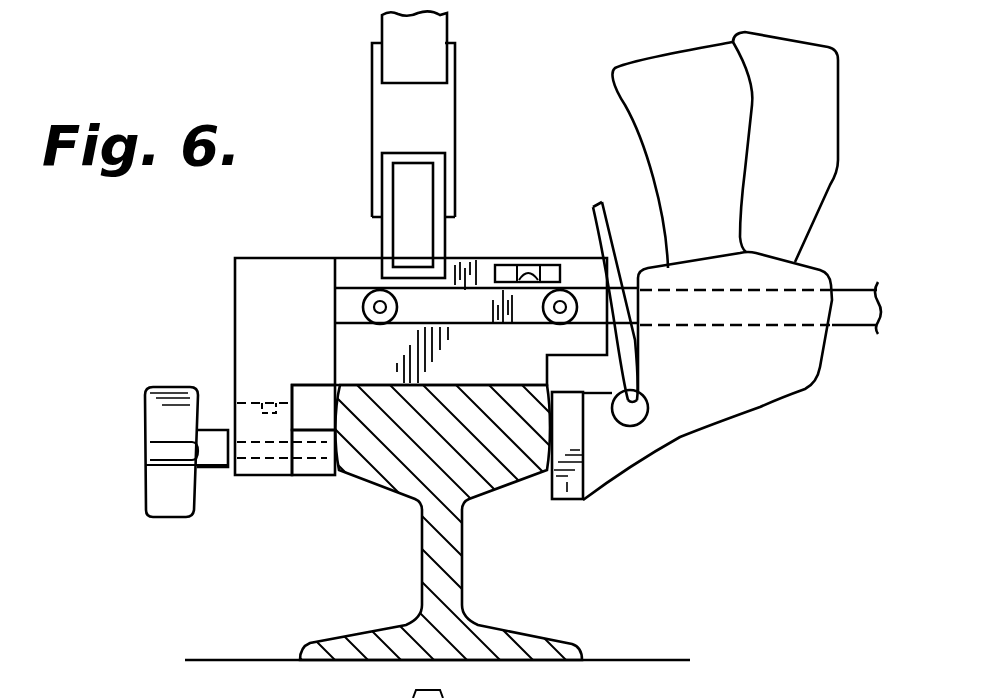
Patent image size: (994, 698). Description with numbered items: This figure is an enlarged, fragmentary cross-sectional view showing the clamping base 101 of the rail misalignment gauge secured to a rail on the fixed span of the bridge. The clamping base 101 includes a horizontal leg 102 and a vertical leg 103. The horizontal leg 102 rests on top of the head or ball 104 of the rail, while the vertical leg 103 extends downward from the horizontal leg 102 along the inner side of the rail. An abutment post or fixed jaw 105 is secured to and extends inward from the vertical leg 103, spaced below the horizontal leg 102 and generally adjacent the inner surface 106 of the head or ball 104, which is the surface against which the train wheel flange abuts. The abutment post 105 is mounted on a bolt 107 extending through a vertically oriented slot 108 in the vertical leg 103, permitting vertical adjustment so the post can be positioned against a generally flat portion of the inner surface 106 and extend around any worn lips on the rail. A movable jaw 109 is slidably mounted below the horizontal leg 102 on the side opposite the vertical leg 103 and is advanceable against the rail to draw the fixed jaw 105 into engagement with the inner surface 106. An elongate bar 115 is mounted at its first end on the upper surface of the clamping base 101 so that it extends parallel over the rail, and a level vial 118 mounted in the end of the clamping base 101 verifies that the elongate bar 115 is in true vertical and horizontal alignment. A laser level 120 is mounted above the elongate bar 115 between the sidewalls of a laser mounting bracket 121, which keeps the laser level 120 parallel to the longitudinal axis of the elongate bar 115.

The clamping base 101 is at (238, 258).
The horizontal leg 102 is at (483, 257).
The vertical leg 103 is at (232, 372).
The head or ball 104 is at (493, 477).
The abutment posts or fixed jaws 105 is at (306, 476).
The inner surface 106 is at (338, 418).
The bolts 107 is at (267, 470).
The vertically oriented slots 108 is at (276, 398).
The movable jaws 109 is at (568, 490).
The elongate bar 115 is at (381, 243).
The level vial 118 is at (535, 257).
The laser level 120 is at (397, 27).
The laser mounting bracket 121 is at (372, 116).